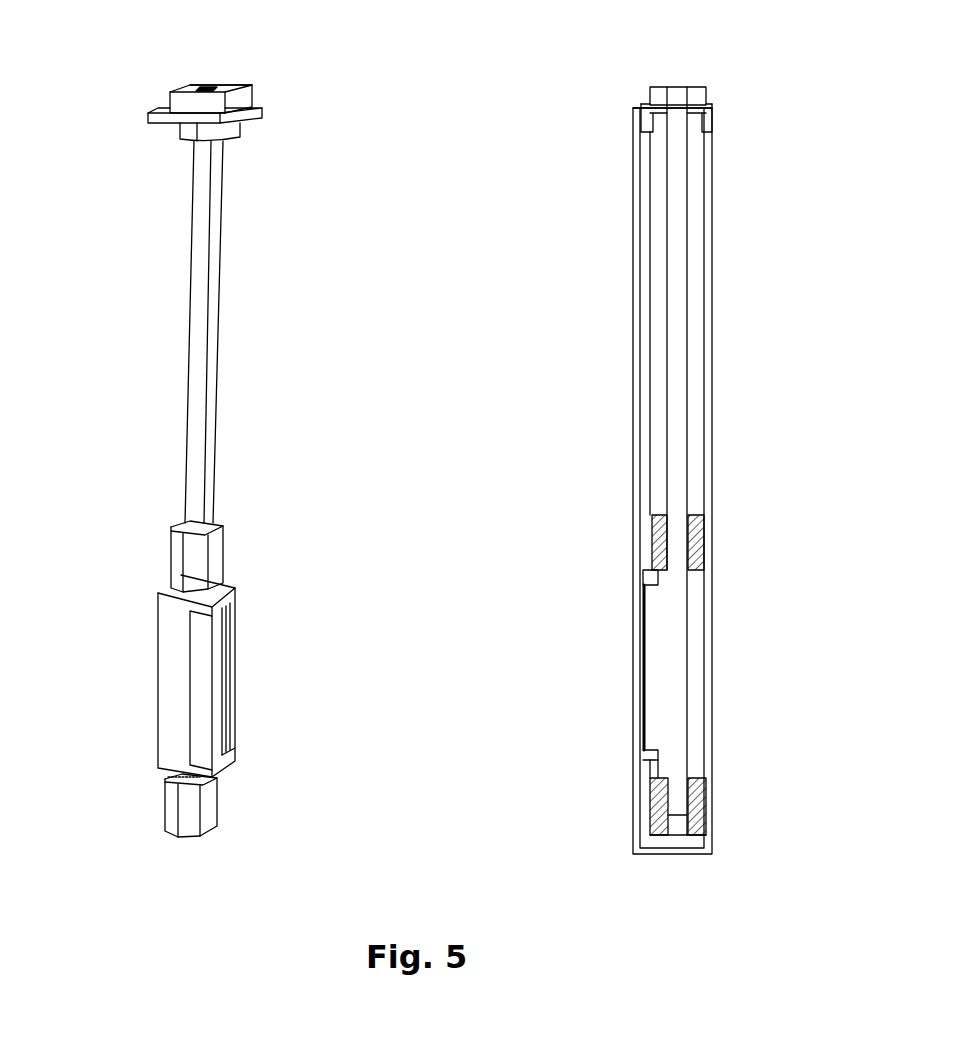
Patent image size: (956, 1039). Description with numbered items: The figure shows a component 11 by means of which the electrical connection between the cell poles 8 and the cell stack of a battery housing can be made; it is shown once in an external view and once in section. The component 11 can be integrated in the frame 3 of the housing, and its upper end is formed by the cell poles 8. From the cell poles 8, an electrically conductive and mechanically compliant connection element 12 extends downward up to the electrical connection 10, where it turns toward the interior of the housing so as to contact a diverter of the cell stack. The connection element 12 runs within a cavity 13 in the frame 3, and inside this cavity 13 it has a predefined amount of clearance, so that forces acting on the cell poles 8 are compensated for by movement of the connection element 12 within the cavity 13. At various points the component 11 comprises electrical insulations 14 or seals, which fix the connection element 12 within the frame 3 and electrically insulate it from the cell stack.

The frame 3 is at (713, 270).
The cell poles 8 is at (252, 97).
The electrical connection 10 is at (205, 680).
The component 11 is at (230, 75).
The connection element 12 is at (222, 262).
The cavity 13 is at (697, 418).
The insulations 14 is at (190, 130).